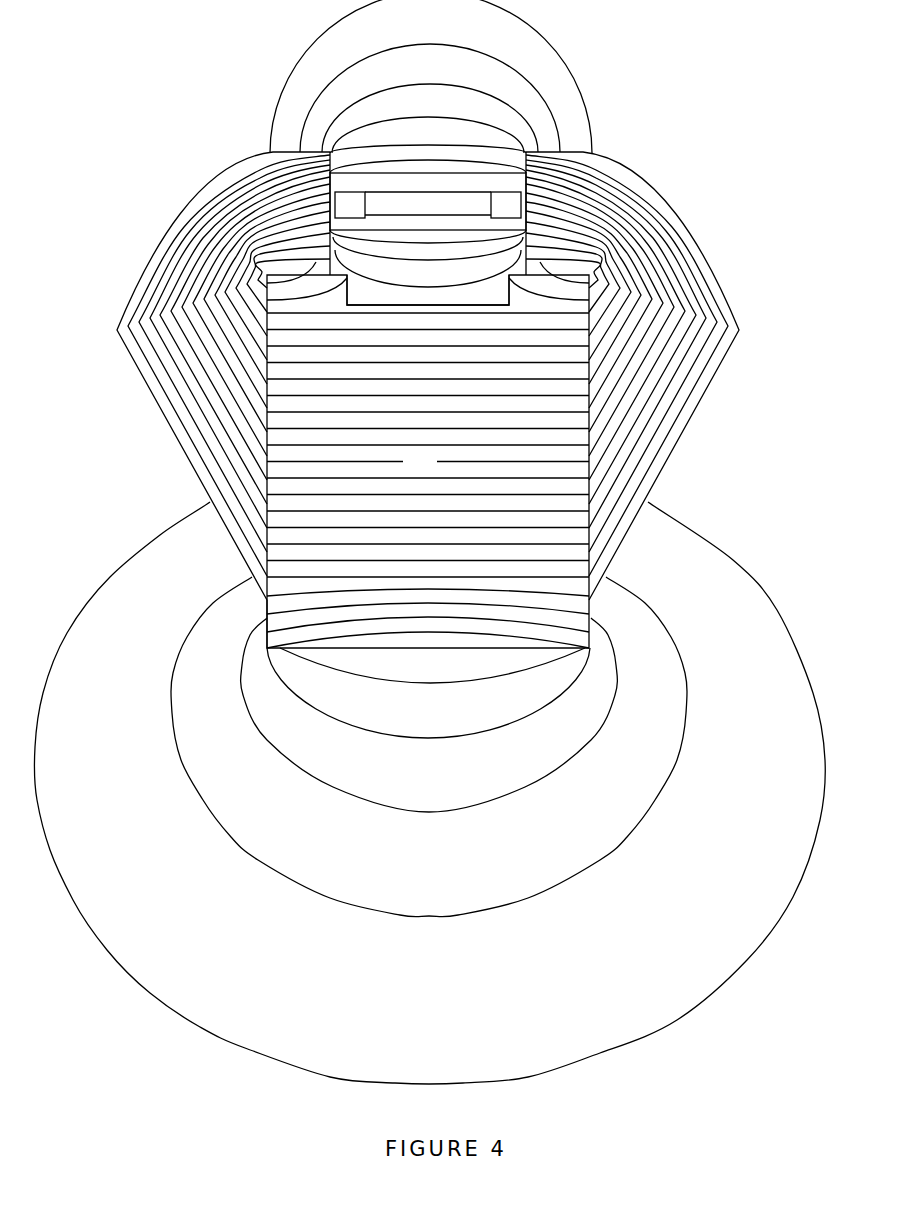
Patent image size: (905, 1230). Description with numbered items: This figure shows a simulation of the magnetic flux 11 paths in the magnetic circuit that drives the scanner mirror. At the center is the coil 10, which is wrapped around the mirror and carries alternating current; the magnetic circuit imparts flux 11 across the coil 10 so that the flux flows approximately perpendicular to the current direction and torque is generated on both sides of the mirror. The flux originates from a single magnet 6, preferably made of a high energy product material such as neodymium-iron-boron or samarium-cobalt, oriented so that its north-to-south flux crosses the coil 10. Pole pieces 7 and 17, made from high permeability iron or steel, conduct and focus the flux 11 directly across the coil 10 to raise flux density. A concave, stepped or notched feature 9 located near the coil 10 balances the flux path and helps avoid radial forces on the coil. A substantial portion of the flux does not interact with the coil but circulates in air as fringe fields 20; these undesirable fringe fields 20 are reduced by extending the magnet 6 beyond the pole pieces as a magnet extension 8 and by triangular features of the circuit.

The fringe fields 20 is at (558, 44).
The pole piece 7 is at (197, 240).
The pole piece 17 is at (652, 222).
The coil 10 is at (352, 202).
The magnetic flux 11 is at (428, 455).
The notched feature 9 is at (347, 291).
The magnet extension 8 is at (262, 620).
The magnet 6 is at (432, 597).